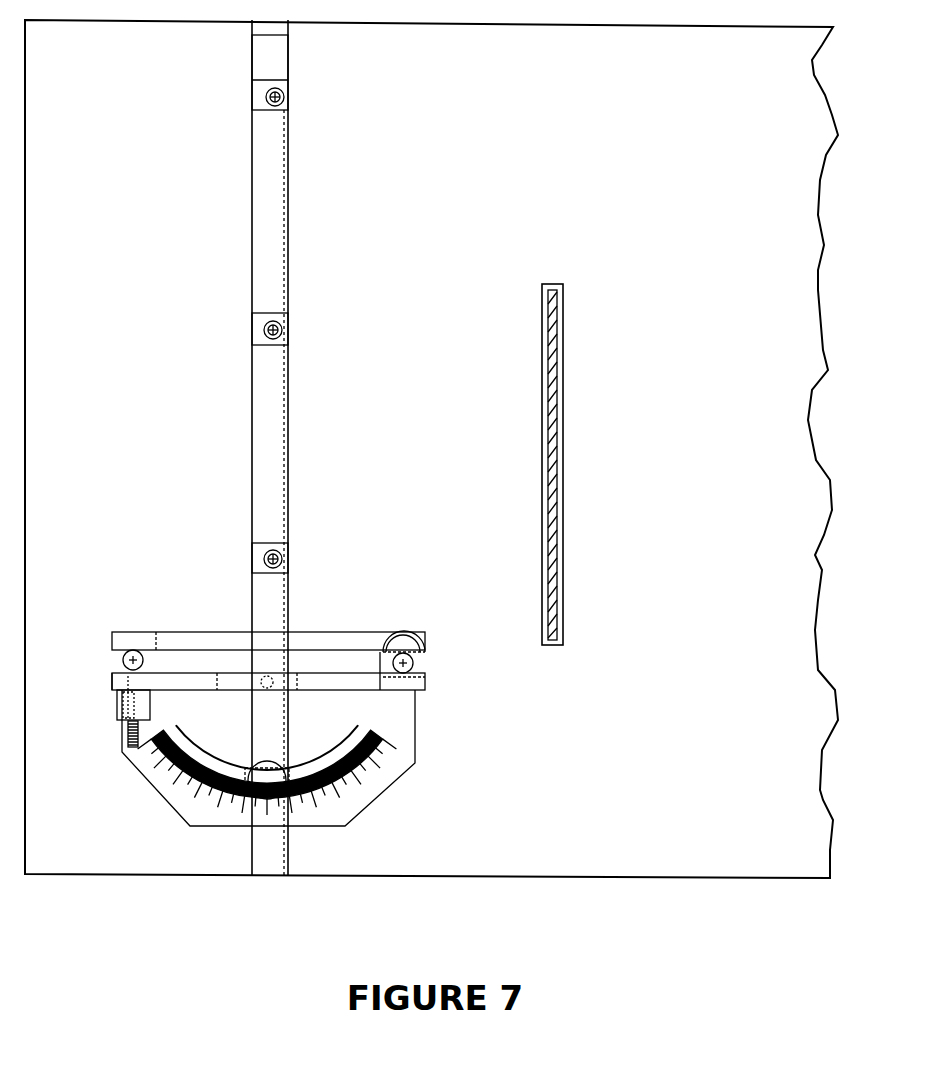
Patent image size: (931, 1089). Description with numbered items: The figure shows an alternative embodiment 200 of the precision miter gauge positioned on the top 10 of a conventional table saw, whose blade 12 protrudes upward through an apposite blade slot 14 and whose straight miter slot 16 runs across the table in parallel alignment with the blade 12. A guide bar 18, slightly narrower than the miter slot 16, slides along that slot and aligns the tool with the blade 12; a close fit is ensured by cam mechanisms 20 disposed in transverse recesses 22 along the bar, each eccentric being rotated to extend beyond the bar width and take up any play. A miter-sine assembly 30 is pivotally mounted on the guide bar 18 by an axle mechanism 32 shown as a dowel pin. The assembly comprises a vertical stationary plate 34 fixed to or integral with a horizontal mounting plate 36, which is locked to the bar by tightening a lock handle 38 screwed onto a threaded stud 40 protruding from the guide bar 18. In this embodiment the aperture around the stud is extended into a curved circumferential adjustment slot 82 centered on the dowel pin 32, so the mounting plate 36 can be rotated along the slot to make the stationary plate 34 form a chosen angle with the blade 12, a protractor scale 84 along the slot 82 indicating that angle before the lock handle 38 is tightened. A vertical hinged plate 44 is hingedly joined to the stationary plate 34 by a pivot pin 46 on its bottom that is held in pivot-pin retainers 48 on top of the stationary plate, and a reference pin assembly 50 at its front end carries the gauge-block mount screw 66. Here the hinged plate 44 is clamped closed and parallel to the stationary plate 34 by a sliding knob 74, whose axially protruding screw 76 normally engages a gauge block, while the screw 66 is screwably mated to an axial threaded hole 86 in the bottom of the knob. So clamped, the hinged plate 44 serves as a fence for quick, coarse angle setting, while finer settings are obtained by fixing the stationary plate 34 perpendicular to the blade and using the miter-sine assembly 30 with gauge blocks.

The table top 10 is at (431, 449).
The blade 12 is at (552, 422).
The blade slot 14 is at (565, 300).
The miter slot 16 is at (278, 27).
The guide bar 18 is at (272, 255).
The cam mechanism 20 is at (262, 92).
The transverse recess 22 is at (260, 100).
The miter-sine assembly 30 is at (314, 758).
The axle mechanism 32 is at (286, 662).
The stationary plate 34 is at (297, 684).
The mounting plate 36 is at (412, 765).
The lock handle 38 is at (263, 762).
The threaded stud 40 is at (277, 772).
The hinged plate 44 is at (345, 640).
The pivot pin 46 is at (408, 667).
The pivot-pin retainer 48 is at (420, 662).
The reference pin assembly 50 is at (125, 654).
The gauge-block mount screw 66 is at (118, 676).
The sliding knob 74 is at (145, 712).
The screw 76 is at (124, 735).
The circumferential adjustment slot 82 is at (350, 728).
The protractor scale 84 is at (170, 785).
The axial threaded hole 86 is at (124, 717).
The alternative embodiment 200 is at (363, 505).